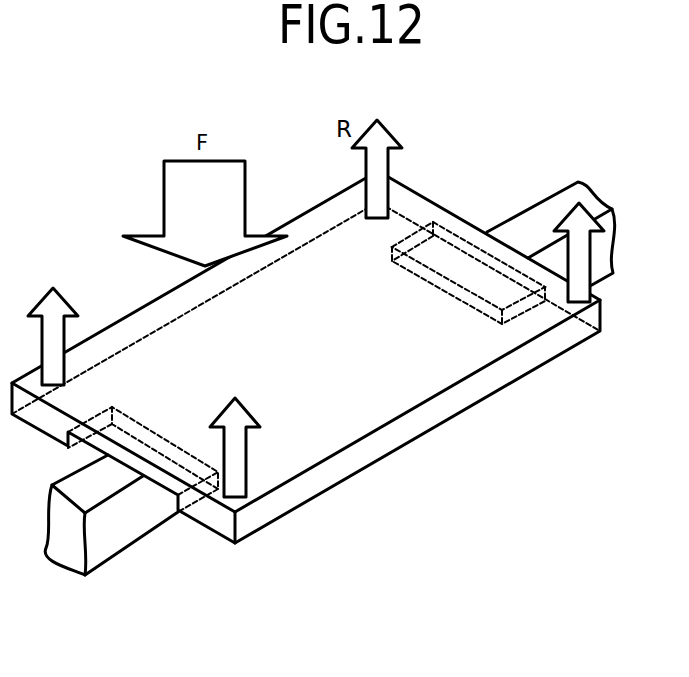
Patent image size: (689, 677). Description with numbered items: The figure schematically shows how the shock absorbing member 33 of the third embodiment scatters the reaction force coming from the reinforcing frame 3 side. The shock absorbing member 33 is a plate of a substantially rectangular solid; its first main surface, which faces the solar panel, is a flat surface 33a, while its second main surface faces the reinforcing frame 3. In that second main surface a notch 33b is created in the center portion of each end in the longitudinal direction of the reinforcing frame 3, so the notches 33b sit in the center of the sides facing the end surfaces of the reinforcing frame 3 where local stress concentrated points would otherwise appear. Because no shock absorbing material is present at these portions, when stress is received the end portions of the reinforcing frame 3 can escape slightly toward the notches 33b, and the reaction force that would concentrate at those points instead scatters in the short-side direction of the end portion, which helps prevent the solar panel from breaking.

The reinforcing frame 3 is at (540, 213).
The shock absorbing member 33 is at (353, 480).
The flat surface 33a is at (377, 407).
The notch 33b is at (163, 492).